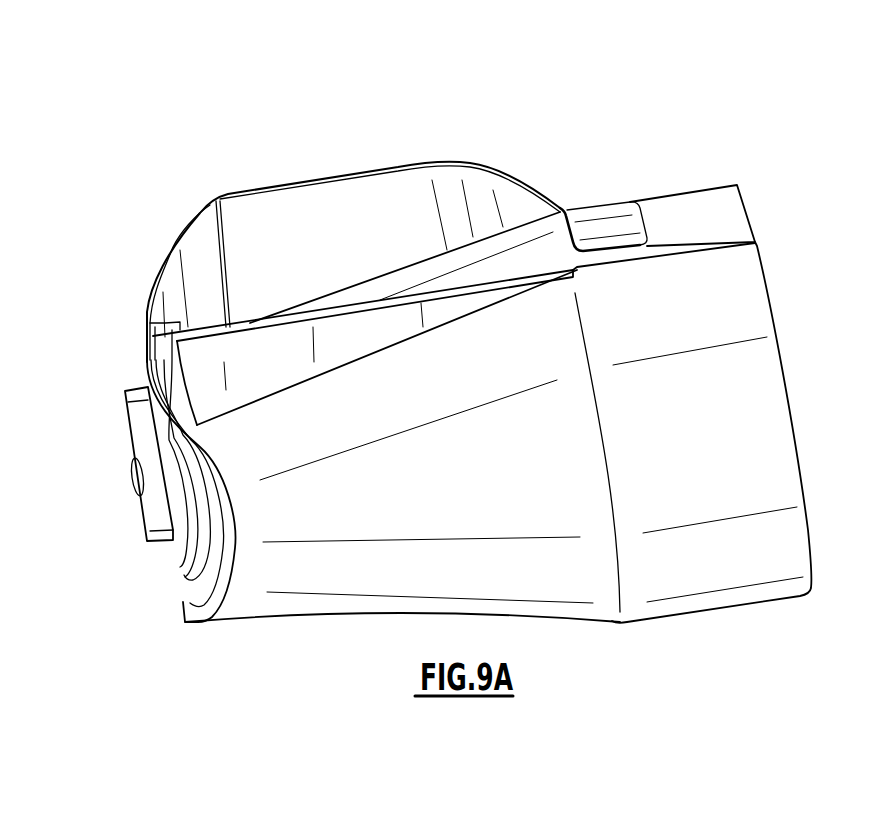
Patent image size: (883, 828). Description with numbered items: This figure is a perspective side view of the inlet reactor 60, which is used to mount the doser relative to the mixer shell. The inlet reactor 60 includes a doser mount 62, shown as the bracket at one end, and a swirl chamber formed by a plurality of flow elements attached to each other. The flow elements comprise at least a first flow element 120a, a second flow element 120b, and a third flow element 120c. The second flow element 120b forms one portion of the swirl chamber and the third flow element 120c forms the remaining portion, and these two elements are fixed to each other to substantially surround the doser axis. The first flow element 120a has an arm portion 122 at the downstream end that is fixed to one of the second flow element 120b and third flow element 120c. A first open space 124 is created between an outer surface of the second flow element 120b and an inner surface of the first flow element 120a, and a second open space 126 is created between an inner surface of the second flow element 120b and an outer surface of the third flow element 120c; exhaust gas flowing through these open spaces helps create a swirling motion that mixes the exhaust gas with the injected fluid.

The inlet reactor 60 is at (760, 118).
The doser mount 62 is at (137, 391).
The first flow element 120a is at (475, 163).
The second flow element 120b is at (720, 220).
The third flow element 120c is at (750, 397).
The arm portion 122 is at (597, 227).
The first open space 124 is at (313, 230).
The second open space 126 is at (250, 363).